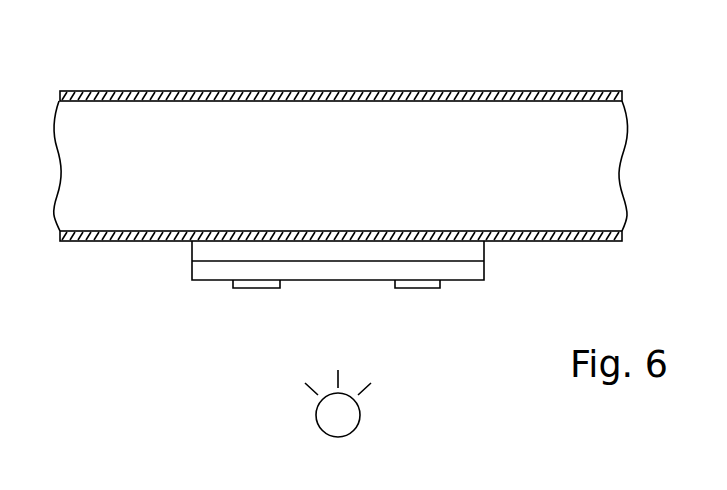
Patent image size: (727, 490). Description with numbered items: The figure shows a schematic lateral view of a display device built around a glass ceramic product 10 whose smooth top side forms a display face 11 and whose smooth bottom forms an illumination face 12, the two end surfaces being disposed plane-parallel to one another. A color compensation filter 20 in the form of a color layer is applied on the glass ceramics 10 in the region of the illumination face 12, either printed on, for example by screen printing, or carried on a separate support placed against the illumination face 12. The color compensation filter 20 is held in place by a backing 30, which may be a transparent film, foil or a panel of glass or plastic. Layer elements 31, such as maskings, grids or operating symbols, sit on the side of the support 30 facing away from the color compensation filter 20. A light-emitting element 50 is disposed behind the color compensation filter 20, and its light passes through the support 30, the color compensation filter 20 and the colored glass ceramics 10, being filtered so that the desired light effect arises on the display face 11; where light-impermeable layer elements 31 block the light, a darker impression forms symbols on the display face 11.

The glass ceramic product 10 is at (460, 112).
The display face 11 is at (393, 90).
The illumination face 12 is at (130, 243).
The color compensation filter 20 is at (477, 248).
The backing 30 is at (472, 268).
The layer elements 31 is at (260, 288).
The light-emitting element 50 is at (333, 420).